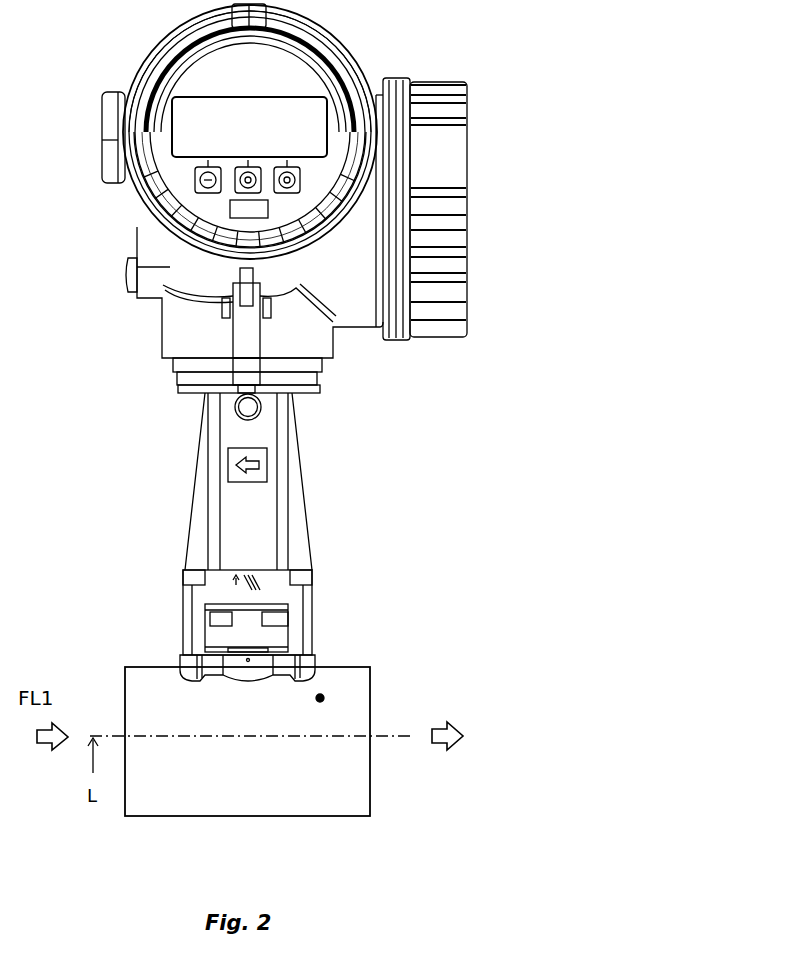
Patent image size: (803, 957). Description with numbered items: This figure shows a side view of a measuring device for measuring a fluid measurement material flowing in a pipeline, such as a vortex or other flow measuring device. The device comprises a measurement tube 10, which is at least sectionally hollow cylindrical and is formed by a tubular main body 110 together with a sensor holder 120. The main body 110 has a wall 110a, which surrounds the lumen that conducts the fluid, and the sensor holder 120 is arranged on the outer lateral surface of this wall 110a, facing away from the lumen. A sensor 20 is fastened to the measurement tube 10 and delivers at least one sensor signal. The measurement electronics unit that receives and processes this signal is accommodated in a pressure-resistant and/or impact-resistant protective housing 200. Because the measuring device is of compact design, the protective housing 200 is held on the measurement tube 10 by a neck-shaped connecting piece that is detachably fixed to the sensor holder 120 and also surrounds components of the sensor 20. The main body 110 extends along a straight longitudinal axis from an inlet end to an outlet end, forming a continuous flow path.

The protective housing 200 is at (332, 302).
The sensor 20 is at (230, 637).
The sensor holder 120 is at (313, 663).
The measurement tube 10 is at (224, 781).
The main body 110 is at (363, 805).
The wall 110a is at (324, 698).